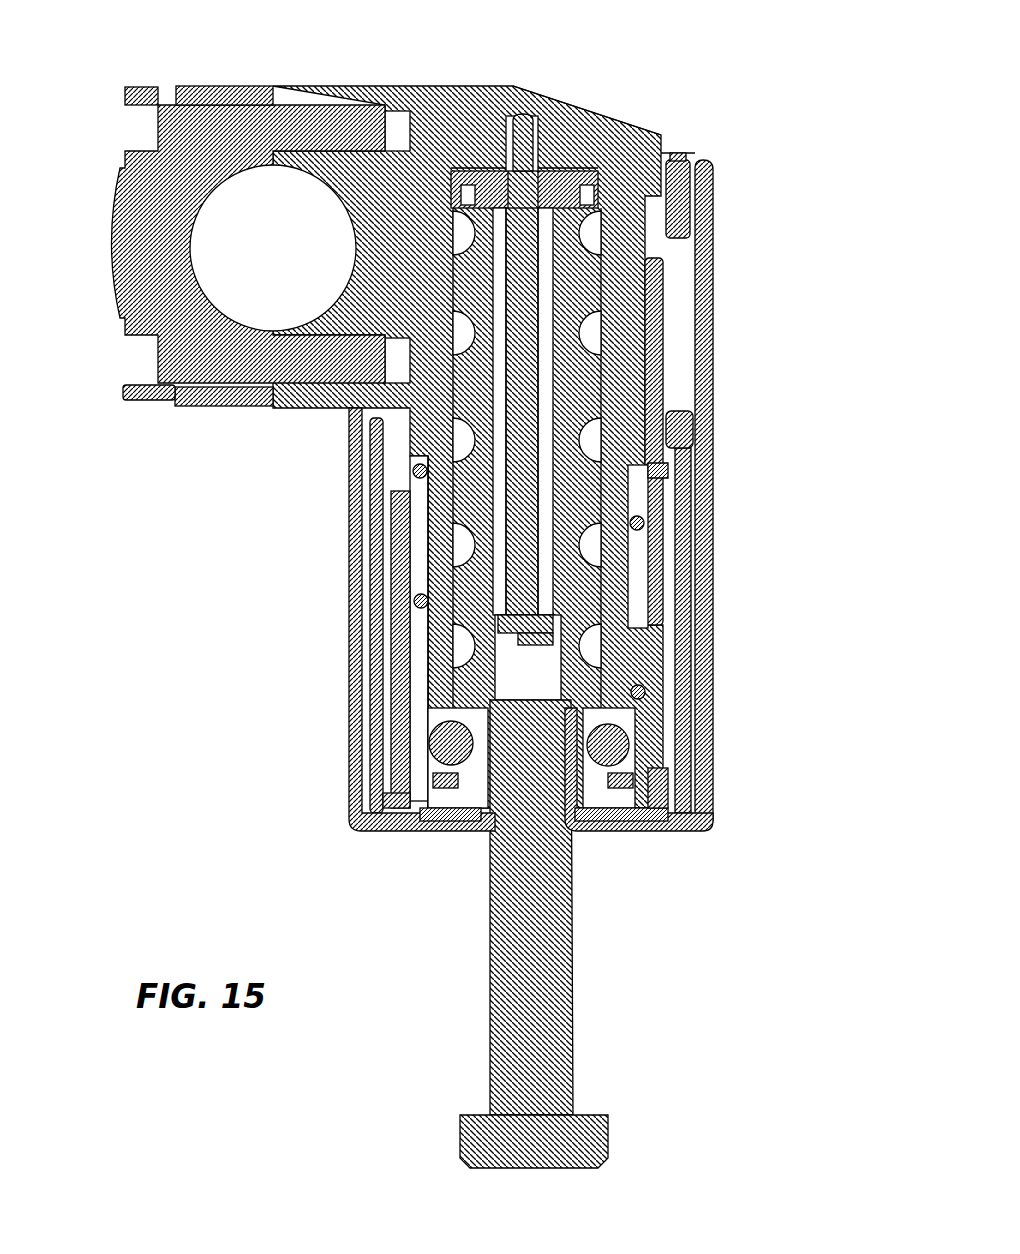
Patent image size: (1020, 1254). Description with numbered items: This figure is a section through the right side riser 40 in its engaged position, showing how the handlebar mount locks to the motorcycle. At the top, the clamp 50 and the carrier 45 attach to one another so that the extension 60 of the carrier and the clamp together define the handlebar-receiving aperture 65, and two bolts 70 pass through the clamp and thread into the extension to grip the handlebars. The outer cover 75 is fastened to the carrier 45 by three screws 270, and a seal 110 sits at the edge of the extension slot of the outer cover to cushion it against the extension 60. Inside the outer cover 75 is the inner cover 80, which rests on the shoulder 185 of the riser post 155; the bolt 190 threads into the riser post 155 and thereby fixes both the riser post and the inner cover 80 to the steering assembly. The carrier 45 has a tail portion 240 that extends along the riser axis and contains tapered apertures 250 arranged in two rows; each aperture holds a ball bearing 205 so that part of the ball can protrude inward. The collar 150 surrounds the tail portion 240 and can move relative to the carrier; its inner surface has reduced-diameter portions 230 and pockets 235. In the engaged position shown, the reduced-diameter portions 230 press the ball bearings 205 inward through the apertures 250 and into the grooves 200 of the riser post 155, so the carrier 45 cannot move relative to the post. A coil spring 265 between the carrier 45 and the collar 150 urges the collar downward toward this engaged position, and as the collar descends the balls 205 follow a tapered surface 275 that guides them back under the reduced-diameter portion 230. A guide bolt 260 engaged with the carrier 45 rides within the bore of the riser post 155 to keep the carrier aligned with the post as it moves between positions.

The riser 40 is at (797, 108).
The carrier 45 is at (583, 110).
The clamp 50 is at (104, 240).
The extension 60 is at (410, 78).
The handlebar-receiving aperture 65 is at (186, 257).
The bolts 70 is at (130, 98).
The outer cover 75 is at (702, 648).
The inner cover 80 is at (675, 465).
The seal 110 is at (343, 402).
The collar 150 is at (385, 495).
The riser post 155 is at (580, 293).
The shoulder 185 is at (467, 825).
The bolt 190 is at (558, 962).
The grooves 200 is at (580, 330).
The ball bearings 205 is at (428, 748).
The reduced-diameter portions 230 is at (410, 585).
The pockets 235 is at (400, 710).
The tail portion 240 is at (432, 648).
The apertures 250 is at (607, 825).
The guide bolt 260 is at (520, 257).
The coil spring 265 is at (652, 490).
The screws 270 is at (668, 182).
The tapered surface 275 is at (650, 703).